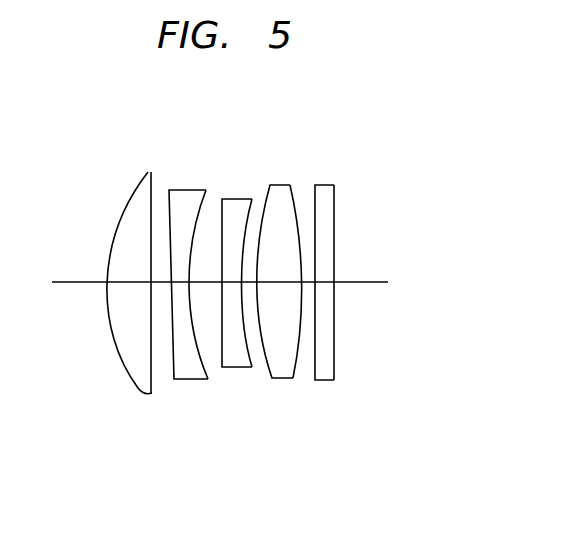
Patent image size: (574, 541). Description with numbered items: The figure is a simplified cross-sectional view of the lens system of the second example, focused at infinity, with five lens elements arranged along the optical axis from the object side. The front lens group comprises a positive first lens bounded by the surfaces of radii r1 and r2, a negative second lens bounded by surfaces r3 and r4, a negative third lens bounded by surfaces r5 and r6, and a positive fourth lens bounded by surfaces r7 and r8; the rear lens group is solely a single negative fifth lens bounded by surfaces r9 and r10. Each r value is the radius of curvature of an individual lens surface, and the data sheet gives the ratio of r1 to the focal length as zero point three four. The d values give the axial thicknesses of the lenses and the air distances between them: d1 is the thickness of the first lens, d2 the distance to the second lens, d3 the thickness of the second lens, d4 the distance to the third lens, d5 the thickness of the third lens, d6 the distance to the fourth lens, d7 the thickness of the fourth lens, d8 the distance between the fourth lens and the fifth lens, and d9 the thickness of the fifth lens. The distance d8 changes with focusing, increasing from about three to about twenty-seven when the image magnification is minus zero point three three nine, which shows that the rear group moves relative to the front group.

The radius of curvature of first lens surface r1 is at (148, 172).
The radius of curvature of second lens surface r2 is at (148, 172).
The radius of curvature of third lens surface r3 is at (169, 190).
The radius of curvature of fourth lens surface r4 is at (206, 190).
The radius of curvature of fifth lens surface r5 is at (222, 199).
The radius of curvature of sixth lens surface r6 is at (252, 199).
The radius of curvature of seventh lens surface r7 is at (270, 185).
The radius of curvature of eighth lens surface r8 is at (290, 185).
The radius of curvature of ninth lens surface r9 is at (315, 185).
The radius of curvature of tenth lens surface r10 is at (334, 185).
The thickness of first lens d1 is at (135, 282).
The axial distance between first and second lenses d2 is at (158, 282).
The thickness of second lens d3 is at (185, 282).
The axial distance between second and third lenses d4 is at (202, 282).
The thickness of third lens d5 is at (237, 282).
The axial distance between third and fourth lenses d6 is at (253, 282).
The thickness of fourth lens d7 is at (278, 282).
The axial distance between fourth and fifth lenses d8 is at (306, 282).
The thickness of fifth lens d9 is at (325, 282).